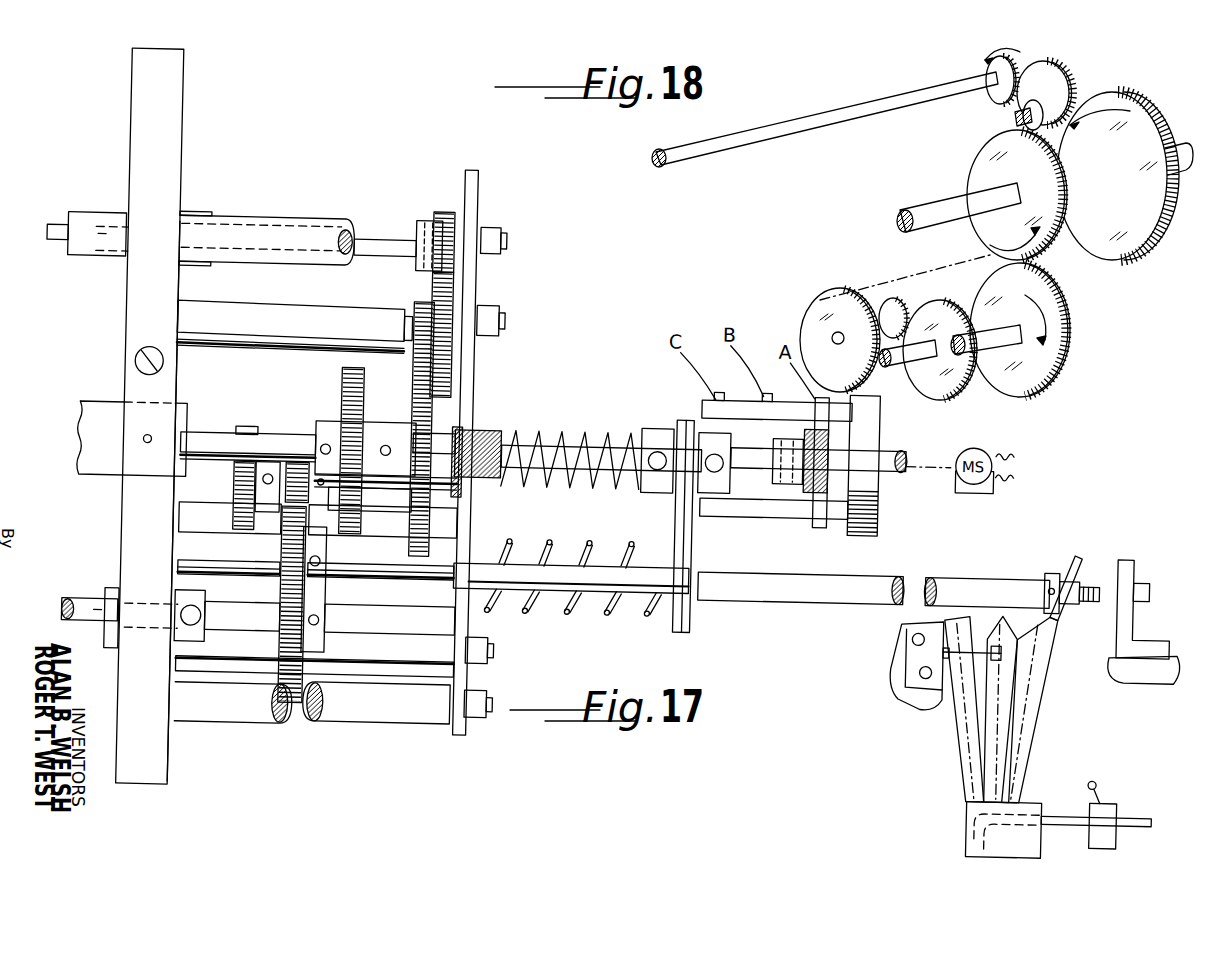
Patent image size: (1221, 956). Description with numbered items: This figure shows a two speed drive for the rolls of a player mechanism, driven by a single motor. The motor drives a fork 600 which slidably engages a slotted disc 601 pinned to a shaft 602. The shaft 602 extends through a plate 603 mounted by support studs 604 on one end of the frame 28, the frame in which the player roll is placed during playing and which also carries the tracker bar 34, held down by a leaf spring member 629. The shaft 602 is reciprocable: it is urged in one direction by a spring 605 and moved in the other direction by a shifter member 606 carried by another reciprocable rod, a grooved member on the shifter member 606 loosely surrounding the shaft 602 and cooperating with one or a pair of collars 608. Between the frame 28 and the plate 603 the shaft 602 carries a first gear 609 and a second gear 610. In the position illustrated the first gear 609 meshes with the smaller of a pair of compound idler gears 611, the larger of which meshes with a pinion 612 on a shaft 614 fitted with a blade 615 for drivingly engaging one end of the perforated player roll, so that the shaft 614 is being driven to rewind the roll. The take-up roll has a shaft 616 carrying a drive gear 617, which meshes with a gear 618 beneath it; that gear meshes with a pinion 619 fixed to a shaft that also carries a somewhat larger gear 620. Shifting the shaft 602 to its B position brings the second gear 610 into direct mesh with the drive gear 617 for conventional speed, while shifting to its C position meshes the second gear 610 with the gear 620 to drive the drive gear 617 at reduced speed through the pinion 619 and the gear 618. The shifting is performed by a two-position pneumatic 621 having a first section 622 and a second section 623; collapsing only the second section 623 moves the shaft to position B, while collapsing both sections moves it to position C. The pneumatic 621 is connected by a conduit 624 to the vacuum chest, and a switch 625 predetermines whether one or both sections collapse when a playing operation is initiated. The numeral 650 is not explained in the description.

In FIG. 17, the frame 28 is at (182, 163).
In FIG. 17, the tracker bar 34 is at (105, 406).
In FIG. 17, the fork 600 is at (872, 420).
In FIG. 17, the slotted disc 601 is at (786, 482).
In FIG. 17, the shaft 602 is at (752, 458).
In FIG. 18, the shaft 602 is at (948, 208).
In FIG. 17, the plate 603 is at (473, 372).
In FIG. 17, the support studs 604 is at (343, 228).
In FIG. 17, the spring 605 is at (528, 438).
In FIG. 17, the shifter member 606 is at (677, 520).
In FIG. 17, the collars 608 is at (655, 430).
In FIG. 17, the first gear 609 is at (413, 400).
In FIG. 18, the first gear 609 is at (1148, 108).
In FIG. 17, the second gear 610 is at (338, 396).
In FIG. 18, the second gear 610 is at (975, 165).
In FIG. 17, the compound idler gears 611 is at (428, 290).
In FIG. 18, the compound idler gears 611 is at (1068, 88).
In FIG. 17, the pinion 612 is at (445, 210).
In FIG. 18, the pinion 612 is at (1012, 68).
In FIG. 17, the shaft 614 is at (383, 240).
In FIG. 18, the shaft 614 is at (931, 90).
In FIG. 17, the blade 615 is at (61, 233).
In FIG. 17, the shaft 616 is at (91, 607).
In FIG. 18, the shaft 616 is at (987, 348).
In FIG. 17, the drive gear 617 is at (294, 703).
In FIG. 18, the drive gear 617 is at (1068, 306).
In FIG. 17, the gear 618 is at (303, 602).
In FIG. 18, the gear 618 is at (952, 394).
In FIG. 17, the pinion 619 is at (294, 463).
In FIG. 18, the pinion 619 is at (900, 303).
In FIG. 17, the gear 620 is at (256, 410).
In FIG. 18, the gear 620 is at (837, 291).
In FIG. 17, the two-position pneumatic 621 is at (960, 746).
In FIG. 17, the first section 622 is at (965, 708).
In FIG. 17, the second section 623 is at (1028, 700).
In FIG. 17, the conduit 624 is at (1127, 802).
In FIG. 17, the switch 625 is at (1086, 784).
In FIG. 17, the leaf spring member 629 is at (176, 378).
In FIG. 17, the hole 650 is at (148, 434).